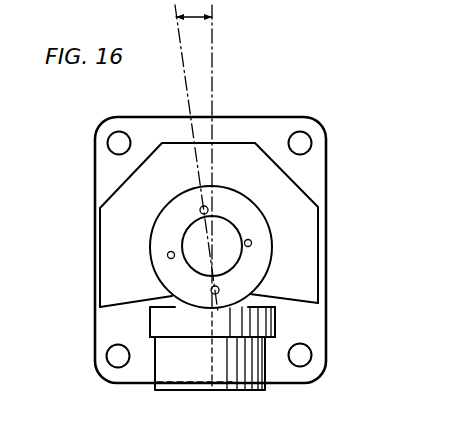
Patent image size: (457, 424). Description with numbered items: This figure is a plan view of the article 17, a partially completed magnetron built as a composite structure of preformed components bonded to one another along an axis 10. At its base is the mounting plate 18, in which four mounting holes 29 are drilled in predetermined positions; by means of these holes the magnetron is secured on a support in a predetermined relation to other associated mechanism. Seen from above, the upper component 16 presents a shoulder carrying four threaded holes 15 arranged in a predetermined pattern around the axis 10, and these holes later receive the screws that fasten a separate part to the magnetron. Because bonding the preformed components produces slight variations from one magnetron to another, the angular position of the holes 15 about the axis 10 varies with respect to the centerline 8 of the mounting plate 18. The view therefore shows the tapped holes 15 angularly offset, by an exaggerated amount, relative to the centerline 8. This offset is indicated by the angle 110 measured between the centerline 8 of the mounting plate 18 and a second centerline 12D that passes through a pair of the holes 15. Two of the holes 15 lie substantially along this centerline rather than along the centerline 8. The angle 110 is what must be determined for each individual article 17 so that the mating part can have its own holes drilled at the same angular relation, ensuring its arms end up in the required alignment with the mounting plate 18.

The centerline 8 is at (212, 68).
The angle 110 is at (194, 18).
The centerline 12D is at (183, 78).
The mounting plate 18 is at (248, 118).
The mounting holes 29 is at (109, 143).
The threaded holes 15 is at (200, 210).
The axis 10 is at (214, 246).
The upper component 16 is at (268, 226).
The article 17 is at (331, 248).